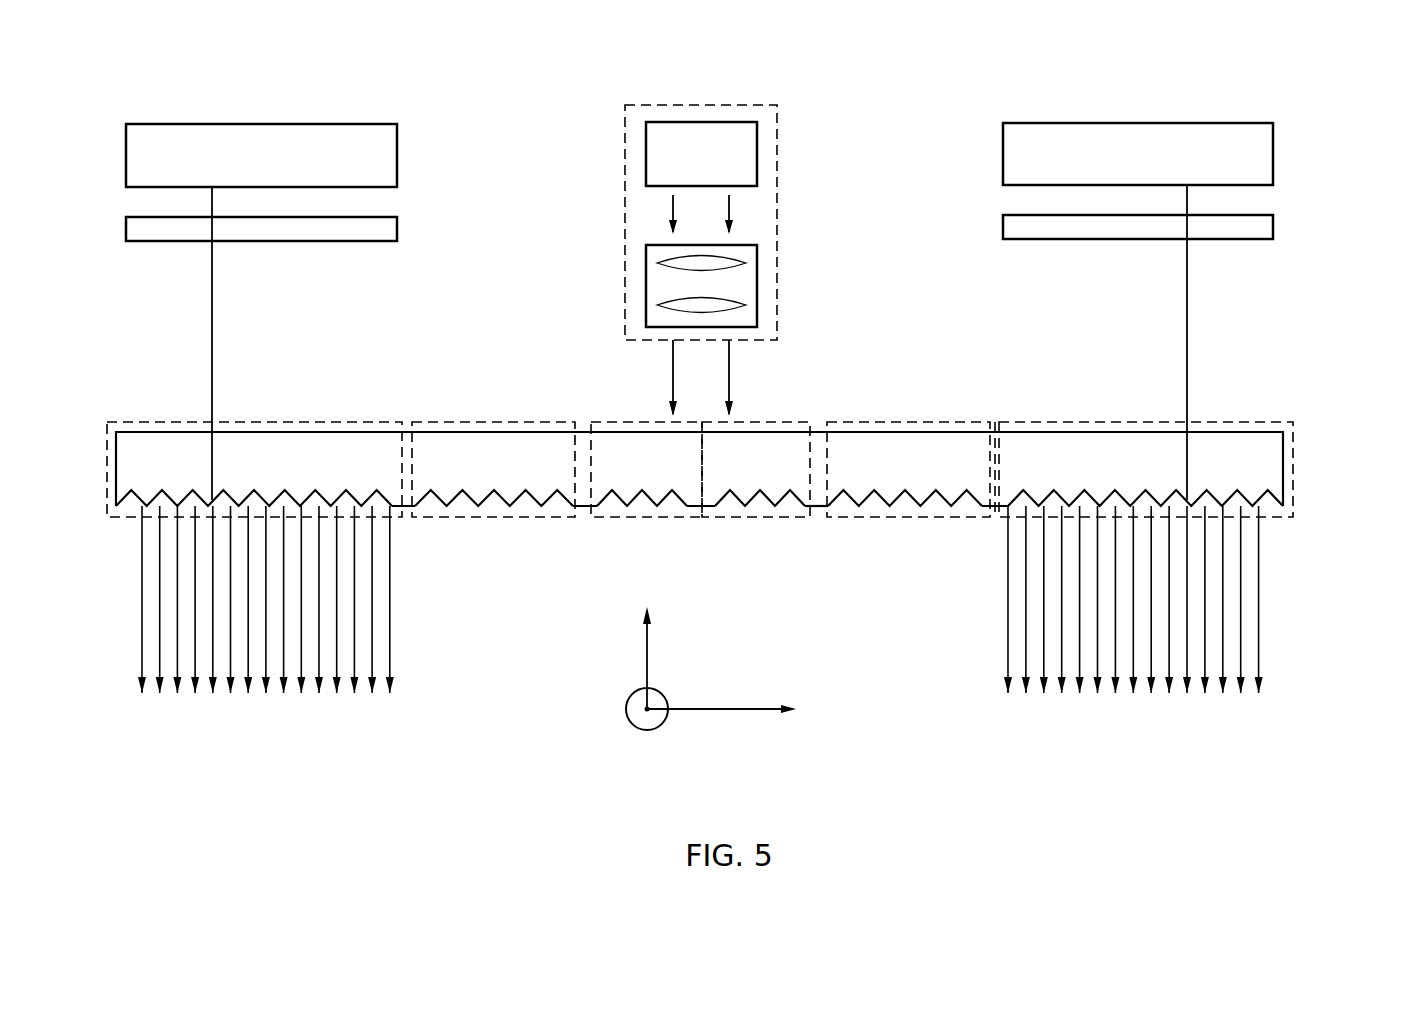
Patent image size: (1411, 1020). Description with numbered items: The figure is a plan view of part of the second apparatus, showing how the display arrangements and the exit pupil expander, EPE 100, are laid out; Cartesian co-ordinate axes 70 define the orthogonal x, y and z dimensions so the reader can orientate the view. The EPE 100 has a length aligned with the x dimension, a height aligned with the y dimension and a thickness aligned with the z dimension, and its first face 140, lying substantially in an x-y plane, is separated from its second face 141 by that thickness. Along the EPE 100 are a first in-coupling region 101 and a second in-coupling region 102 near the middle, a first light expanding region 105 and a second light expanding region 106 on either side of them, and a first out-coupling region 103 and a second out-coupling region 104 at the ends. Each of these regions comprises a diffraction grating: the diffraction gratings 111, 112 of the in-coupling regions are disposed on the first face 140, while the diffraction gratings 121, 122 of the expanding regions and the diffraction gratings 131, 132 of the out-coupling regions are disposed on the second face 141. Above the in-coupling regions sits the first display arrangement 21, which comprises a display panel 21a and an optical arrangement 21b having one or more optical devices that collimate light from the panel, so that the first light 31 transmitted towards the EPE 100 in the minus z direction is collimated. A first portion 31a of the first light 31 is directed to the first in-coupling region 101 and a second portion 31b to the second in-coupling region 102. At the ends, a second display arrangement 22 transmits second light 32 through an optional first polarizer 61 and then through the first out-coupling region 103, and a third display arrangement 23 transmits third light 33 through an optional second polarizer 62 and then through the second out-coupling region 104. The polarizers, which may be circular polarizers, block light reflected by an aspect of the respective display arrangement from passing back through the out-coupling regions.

The first display arrangement 21 is at (741, 199).
The display panel 21a is at (700, 122).
The optical arrangement 21b is at (758, 262).
The second display arrangement 22 is at (1275, 152).
The third display arrangement 23 is at (400, 152).
The first light 31 is at (700, 498).
The first portion of the first light 31a is at (730, 387).
The second portion of the first light 31b is at (670, 378).
The second light 32 is at (1189, 320).
The third light 33 is at (213, 370).
The first polarizer 61 is at (1003, 230).
The second polarizer 62 is at (400, 230).
The Cartesian co-ordinate axes 70 is at (700, 726).
The EPE 100 is at (739, 469).
The first in-coupling region 101 is at (727, 520).
The second in-coupling region 102 is at (620, 520).
The first out-coupling region 103 is at (1210, 418).
The second out-coupling region 104 is at (318, 418).
The first light expanding region 105 is at (908, 418).
The second light expanding region 106 is at (495, 418).
The diffraction grating 111 is at (740, 492).
The diffraction grating 112 is at (650, 492).
The diffraction grating 121 is at (890, 492).
The diffraction grating 122 is at (490, 492).
The diffraction grating 131 is at (1110, 492).
The diffraction grating 132 is at (162, 492).
The first face 140 is at (995, 425).
The second face 141 is at (822, 508).